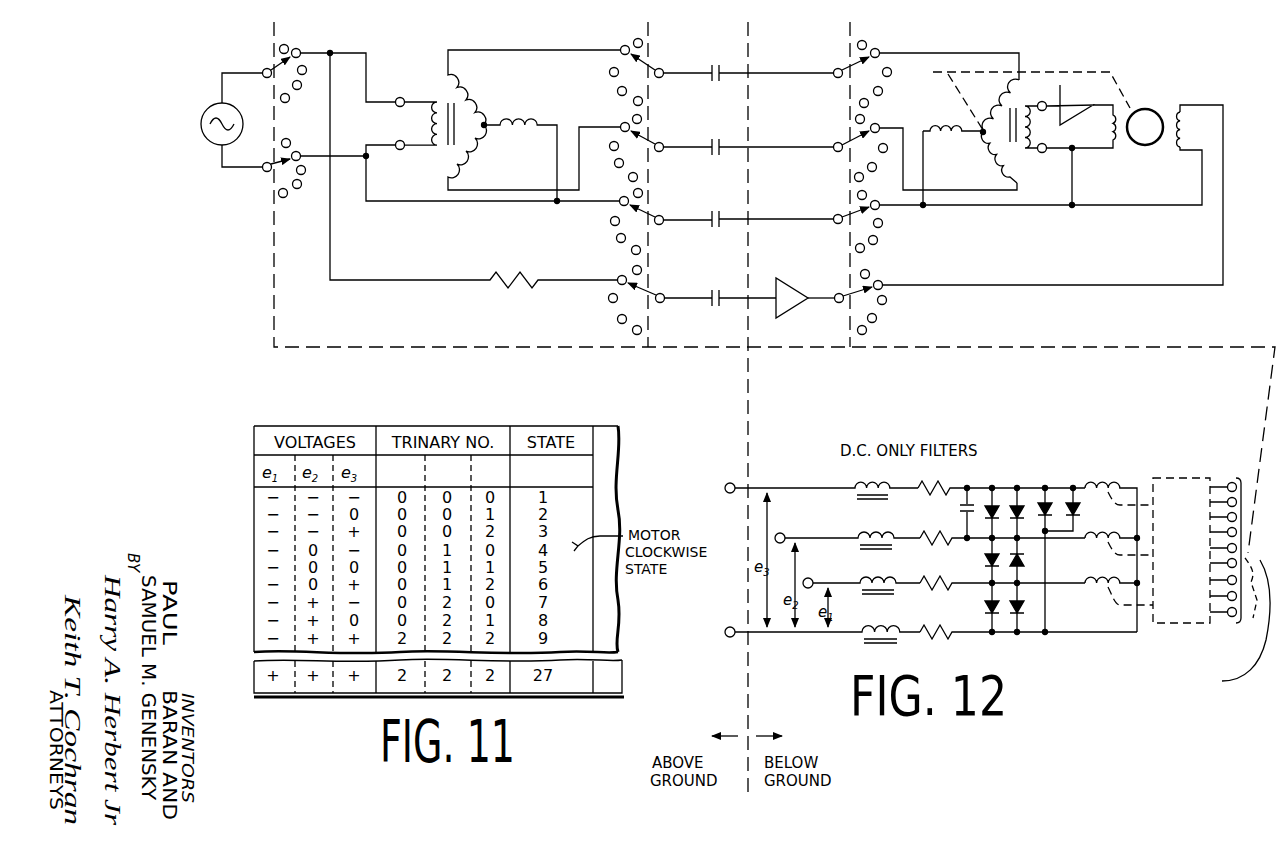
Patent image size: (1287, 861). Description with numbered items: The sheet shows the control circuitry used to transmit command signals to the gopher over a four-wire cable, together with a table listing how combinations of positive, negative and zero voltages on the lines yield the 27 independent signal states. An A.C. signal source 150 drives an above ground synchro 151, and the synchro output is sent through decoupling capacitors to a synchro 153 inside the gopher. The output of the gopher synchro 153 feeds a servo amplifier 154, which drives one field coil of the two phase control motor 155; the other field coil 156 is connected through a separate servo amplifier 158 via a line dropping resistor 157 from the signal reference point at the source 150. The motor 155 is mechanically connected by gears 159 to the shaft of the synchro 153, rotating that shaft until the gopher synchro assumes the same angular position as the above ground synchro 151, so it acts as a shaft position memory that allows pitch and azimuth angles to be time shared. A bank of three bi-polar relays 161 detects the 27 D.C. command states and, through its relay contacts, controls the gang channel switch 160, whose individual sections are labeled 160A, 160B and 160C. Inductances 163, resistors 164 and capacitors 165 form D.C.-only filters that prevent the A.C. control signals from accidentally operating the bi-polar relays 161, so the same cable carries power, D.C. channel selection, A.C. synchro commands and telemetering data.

The A.C. signal source 150 is at (203, 130).
The above ground synchro 151 is at (446, 95).
The gopher synchro 153 is at (1010, 150).
The servo amplifier 154 is at (1079, 115).
The two phase control motor 155 is at (1138, 145).
The field coil 156 is at (1183, 102).
The line dropping resistor 157 is at (530, 260).
The servo amplifier 158 is at (800, 302).
The gears 159 is at (1062, 70).
The gang channel switch 160 is at (884, 307).
The gang channel switch section 160A is at (300, 50).
The gang channel switch section 160B is at (284, 198).
The gang channel switch section 160C is at (648, 63).
The bi-polar relays 161 is at (1126, 488).
The inductances 163 is at (891, 470).
The resistors 164 is at (953, 484).
The capacitors 165 is at (960, 512).
The signal states 27 is at (1182, 585).